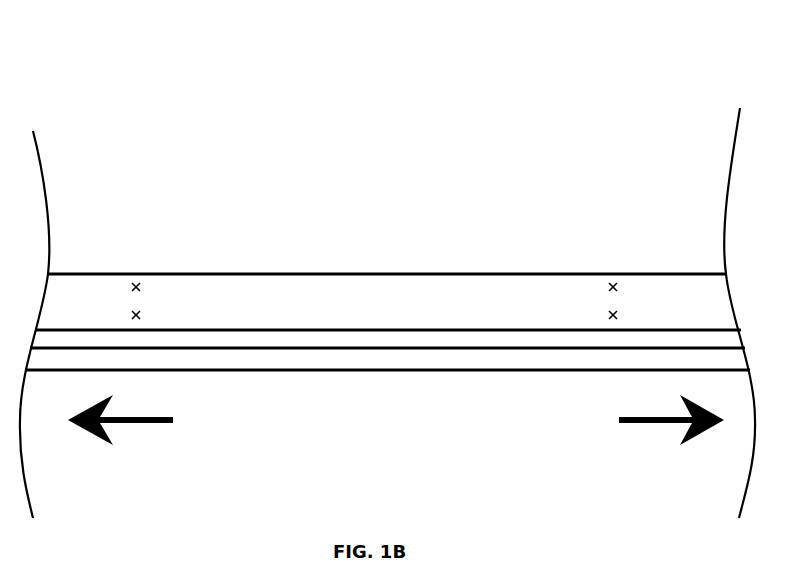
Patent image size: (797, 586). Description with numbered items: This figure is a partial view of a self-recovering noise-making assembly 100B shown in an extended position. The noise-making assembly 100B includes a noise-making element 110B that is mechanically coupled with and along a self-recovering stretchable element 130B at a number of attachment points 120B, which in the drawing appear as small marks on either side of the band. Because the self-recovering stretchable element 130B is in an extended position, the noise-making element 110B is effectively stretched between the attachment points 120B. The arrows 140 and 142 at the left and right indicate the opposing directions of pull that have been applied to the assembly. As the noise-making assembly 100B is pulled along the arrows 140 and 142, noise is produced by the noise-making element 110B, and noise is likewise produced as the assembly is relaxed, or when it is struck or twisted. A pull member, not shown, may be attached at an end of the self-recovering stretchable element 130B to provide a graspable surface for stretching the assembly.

The self-recovering noise-making assembly 100B is at (511, 67).
The noise-making element 110B is at (410, 273).
The attachment points 120B is at (141, 312).
The self-recovering stretchable element 130B is at (492, 372).
The arrow 140 is at (138, 424).
The arrow 142 is at (664, 424).